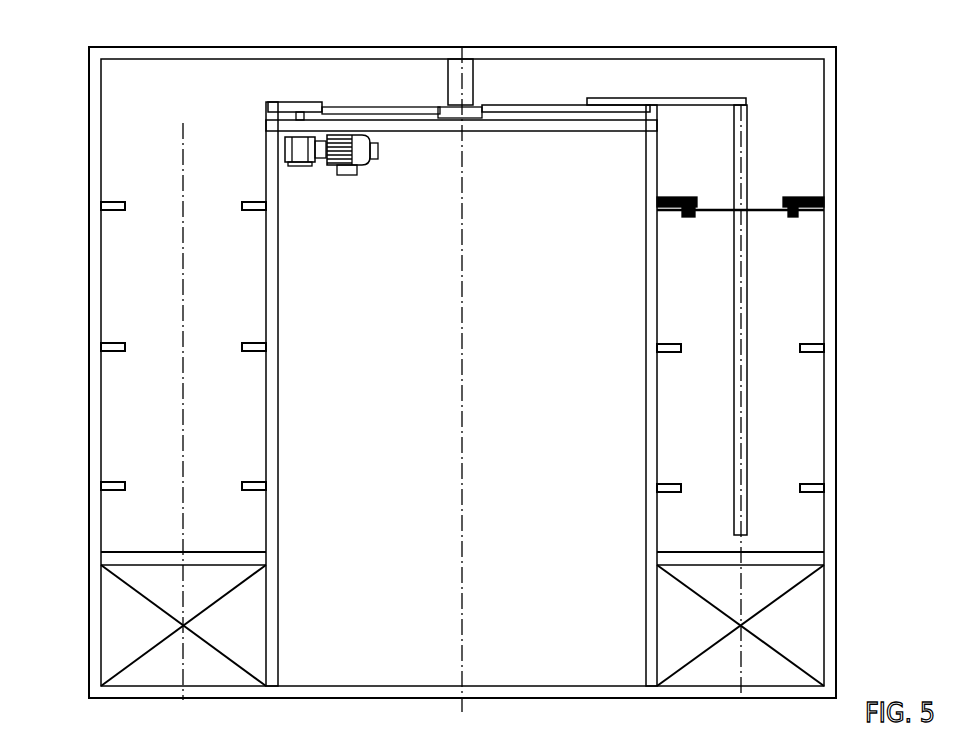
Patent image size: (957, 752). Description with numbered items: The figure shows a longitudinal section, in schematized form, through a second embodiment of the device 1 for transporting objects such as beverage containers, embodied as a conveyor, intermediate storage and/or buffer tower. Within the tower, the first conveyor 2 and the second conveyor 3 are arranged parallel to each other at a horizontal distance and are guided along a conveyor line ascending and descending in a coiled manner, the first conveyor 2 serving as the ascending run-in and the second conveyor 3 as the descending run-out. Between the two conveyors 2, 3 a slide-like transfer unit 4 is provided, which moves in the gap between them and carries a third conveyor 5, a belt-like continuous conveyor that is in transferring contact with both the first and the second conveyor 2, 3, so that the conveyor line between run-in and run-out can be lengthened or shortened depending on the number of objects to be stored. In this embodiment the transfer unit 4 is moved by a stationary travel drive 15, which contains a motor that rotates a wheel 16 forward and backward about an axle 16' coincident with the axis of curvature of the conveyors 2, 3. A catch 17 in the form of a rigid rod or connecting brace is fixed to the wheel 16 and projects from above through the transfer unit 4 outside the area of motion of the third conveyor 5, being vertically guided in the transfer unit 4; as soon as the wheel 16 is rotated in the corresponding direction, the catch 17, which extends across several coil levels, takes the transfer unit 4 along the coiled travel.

The device 1 is at (886, 74).
The first conveyor 2 is at (93, 195).
The second conveyor 3 is at (274, 196).
The transfer unit 4 is at (765, 213).
The third conveyor 5 is at (795, 197).
The travel drive 15 is at (362, 172).
The wheel 16 is at (506, 137).
The axle 16' is at (488, 379).
The catch 17 is at (748, 117).